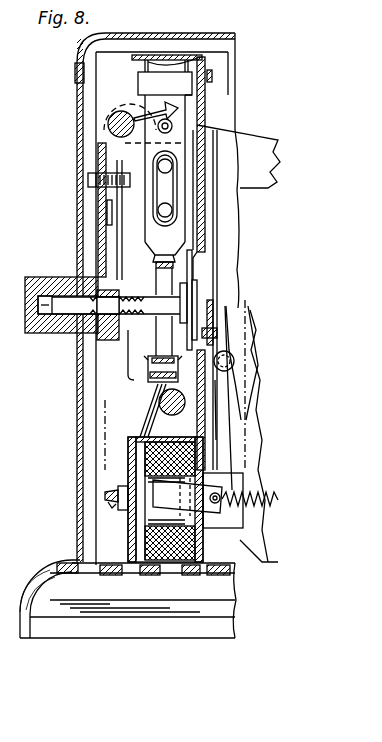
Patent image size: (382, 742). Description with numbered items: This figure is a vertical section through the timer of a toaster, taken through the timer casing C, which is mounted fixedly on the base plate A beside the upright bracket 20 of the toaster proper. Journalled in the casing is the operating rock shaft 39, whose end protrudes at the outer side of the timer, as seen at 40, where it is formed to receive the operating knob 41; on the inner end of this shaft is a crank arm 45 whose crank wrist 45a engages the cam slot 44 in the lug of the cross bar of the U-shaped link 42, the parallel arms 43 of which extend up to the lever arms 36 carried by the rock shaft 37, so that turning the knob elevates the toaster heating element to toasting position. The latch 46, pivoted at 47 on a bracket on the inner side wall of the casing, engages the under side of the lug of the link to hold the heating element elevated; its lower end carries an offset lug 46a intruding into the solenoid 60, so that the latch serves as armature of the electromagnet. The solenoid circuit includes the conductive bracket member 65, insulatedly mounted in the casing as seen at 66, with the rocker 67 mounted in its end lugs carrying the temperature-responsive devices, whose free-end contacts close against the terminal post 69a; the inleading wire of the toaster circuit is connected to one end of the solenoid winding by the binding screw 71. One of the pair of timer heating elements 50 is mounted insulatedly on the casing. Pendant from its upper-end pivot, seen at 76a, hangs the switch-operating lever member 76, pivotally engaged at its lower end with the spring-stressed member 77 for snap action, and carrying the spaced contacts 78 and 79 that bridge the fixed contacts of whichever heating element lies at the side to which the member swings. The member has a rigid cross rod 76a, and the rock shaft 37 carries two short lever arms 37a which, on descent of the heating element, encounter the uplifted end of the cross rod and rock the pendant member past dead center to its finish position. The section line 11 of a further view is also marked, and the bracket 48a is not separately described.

The section line 11 is at (148, 52).
The casing C is at (85, 196).
The switch-operating lever member 76 is at (175, 83).
The cross rod 76a is at (200, 58).
The rock shaft 37 is at (108, 121).
The short lever arms 37a is at (162, 108).
The contact 78 is at (160, 165).
The contact 79 is at (162, 211).
The post 69a is at (90, 176).
The spring-stressed member 77 is at (162, 330).
The operating knob 41 is at (68, 283).
The protruding end of rock shaft 40 is at (100, 325).
The operating rock shaft 39 is at (157, 320).
The crank arm 45 is at (197, 278).
The plate 48a is at (205, 312).
The crank wrist 45a is at (210, 328).
The U-shaped link 42 is at (212, 345).
The arms of U-shaped link 43 is at (218, 220).
The heating element 50 is at (205, 237).
The lever arm 36 is at (256, 152).
The cam slot 44 is at (232, 366).
The pivot 47 is at (236, 394).
The insulated mounting 66 is at (205, 190).
The latch 46 is at (222, 448).
The offset lug 46a is at (200, 520).
The solenoid 60 is at (128, 546).
The conductive bracket member 65 is at (168, 405).
The rocker 67 is at (153, 418).
The binding screw 71 is at (108, 490).
The base plate A is at (62, 640).
The upright bracket 20 is at (248, 562).